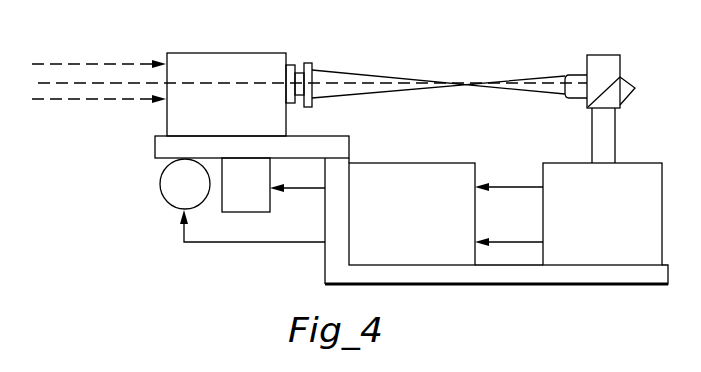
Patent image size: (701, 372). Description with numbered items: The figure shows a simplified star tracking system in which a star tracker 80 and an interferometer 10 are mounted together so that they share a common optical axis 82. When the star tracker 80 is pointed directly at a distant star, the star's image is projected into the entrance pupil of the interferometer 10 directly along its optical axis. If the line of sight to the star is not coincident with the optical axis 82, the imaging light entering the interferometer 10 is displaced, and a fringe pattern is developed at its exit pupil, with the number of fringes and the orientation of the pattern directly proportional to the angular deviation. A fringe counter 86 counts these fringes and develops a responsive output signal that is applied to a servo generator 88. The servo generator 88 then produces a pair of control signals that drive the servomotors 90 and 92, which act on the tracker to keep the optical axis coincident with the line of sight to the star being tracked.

The interferometer 10 is at (617, 64).
The star tracker 80 is at (244, 53).
The optical axis 82 is at (258, 90).
The fringe counter 86 is at (628, 163).
The servo generator 88 is at (437, 163).
The servomotor 90 is at (271, 211).
The servomotor 92 is at (169, 200).